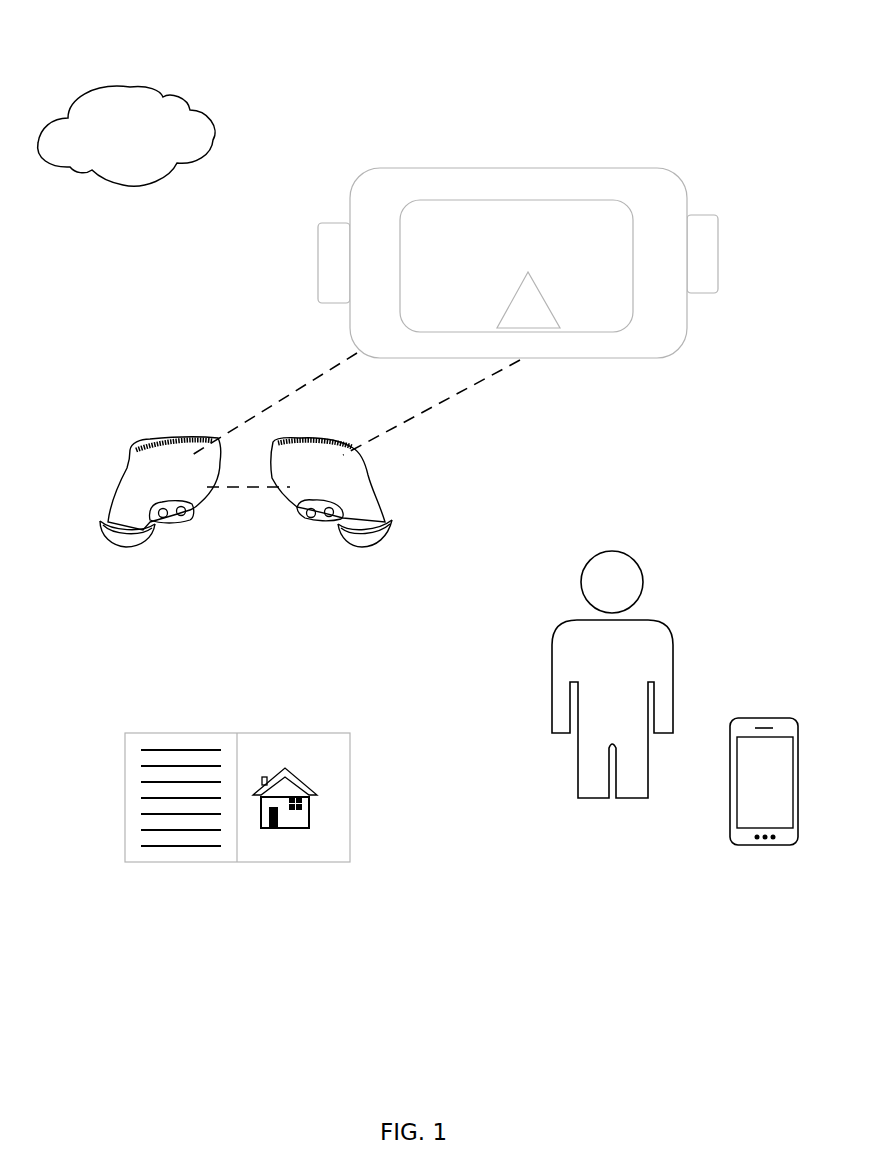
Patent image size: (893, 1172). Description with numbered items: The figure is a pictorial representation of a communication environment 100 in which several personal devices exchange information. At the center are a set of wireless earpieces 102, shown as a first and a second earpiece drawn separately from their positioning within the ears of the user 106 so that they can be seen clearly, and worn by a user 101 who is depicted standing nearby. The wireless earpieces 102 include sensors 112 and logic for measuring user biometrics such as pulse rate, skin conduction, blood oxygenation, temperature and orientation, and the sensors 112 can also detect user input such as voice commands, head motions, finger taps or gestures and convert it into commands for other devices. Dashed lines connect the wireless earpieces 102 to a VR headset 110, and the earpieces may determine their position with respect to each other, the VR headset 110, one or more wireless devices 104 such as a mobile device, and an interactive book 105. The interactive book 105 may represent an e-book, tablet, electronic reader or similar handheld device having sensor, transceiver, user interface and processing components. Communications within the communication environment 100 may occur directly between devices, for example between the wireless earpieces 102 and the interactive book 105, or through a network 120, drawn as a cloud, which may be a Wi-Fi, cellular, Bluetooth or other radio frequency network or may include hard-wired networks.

The communication environment 100 is at (255, 124).
The user 101 is at (627, 673).
The wireless earpieces 102 is at (124, 410).
The wireless device 104 is at (763, 847).
The interactive book 105 is at (348, 798).
The ears of the user 106 is at (123, 535).
The VR headset 110 is at (518, 168).
The sensors 112 is at (137, 462).
The network 120 is at (145, 155).